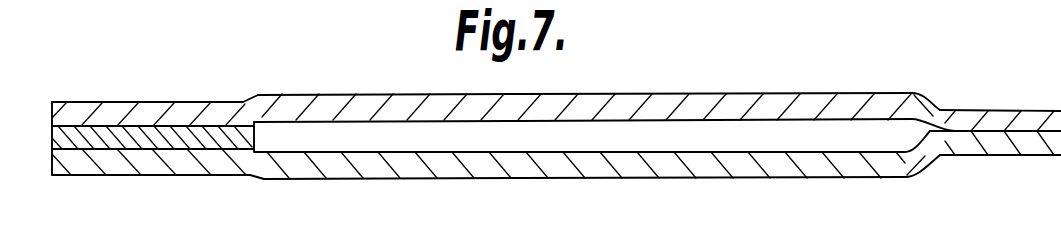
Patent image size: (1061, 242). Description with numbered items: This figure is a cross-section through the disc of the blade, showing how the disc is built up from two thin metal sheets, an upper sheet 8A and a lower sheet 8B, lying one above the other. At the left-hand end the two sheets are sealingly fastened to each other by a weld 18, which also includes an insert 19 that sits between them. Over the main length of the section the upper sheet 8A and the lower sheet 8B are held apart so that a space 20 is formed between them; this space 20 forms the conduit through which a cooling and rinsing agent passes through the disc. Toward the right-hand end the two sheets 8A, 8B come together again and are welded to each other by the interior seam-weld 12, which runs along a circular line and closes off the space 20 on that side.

The upper sheet 8A is at (612, 165).
The lower sheet 8B is at (645, 105).
The seam-weld 12 is at (1033, 80).
The weld 18 is at (150, 102).
The insert 19 is at (110, 138).
The space 20 is at (390, 138).